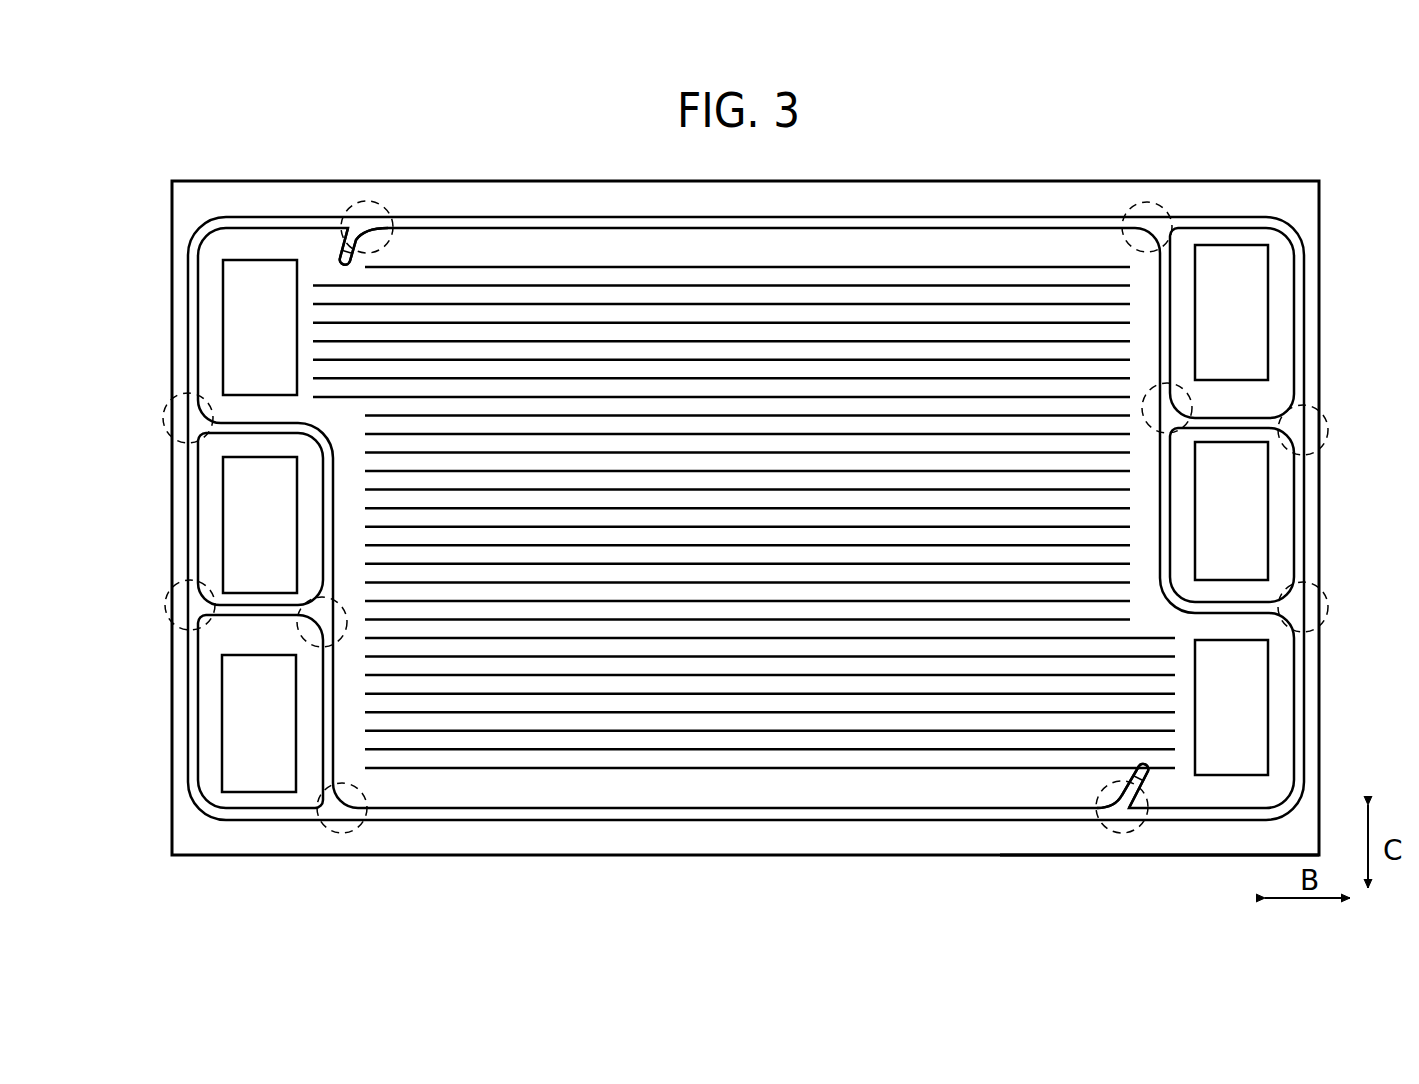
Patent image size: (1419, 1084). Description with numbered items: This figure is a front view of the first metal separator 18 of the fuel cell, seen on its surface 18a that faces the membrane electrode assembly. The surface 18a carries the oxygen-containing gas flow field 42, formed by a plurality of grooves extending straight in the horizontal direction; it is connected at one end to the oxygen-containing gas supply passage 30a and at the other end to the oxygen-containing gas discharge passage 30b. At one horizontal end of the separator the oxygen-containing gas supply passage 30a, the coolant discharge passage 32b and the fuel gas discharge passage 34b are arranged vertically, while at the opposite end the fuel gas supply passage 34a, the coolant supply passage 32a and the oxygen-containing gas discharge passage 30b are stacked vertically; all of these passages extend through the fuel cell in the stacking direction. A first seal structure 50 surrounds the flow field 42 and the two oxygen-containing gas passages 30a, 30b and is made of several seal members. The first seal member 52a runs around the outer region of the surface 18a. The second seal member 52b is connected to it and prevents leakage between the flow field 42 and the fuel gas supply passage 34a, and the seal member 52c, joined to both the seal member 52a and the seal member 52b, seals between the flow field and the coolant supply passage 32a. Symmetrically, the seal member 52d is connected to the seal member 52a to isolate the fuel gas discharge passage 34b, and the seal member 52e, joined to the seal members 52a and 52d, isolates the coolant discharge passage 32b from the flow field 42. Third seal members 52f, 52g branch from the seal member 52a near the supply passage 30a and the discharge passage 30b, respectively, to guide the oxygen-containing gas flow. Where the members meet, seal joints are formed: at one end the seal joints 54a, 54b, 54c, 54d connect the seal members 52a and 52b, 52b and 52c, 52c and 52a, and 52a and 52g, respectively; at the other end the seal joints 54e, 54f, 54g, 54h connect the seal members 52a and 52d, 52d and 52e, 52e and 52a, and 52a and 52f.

The first metal separator 18 is at (1016, 128).
The surface 18a is at (1218, 848).
The oxygen-containing gas supply passage 30a is at (260, 327).
The oxygen-containing gas discharge passage 30b is at (1231, 707).
The coolant supply passage 32a is at (1231, 511).
The coolant discharge passage 32b is at (260, 525).
The fuel gas supply passage 34a is at (1231, 312).
The fuel gas discharge passage 34b is at (259, 723).
The oxygen-containing gas flow field 42 is at (592, 262).
The first seal structure 50 is at (806, 213).
The first seal member 52a is at (745, 822).
The second seal member 52b is at (1170, 333).
The seal member 52c is at (1160, 545).
The seal member 52d is at (323, 691).
The seal member 52e is at (323, 553).
The third seal member 52f is at (345, 244).
The third seal member 52g is at (1150, 788).
The seal joint 54a is at (1148, 200).
The seal joint 54b is at (1192, 407).
The seal joint 54c is at (1330, 608).
The seal joint 54d is at (1120, 835).
The seal joint 54e is at (165, 608).
The seal joint 54f is at (300, 625).
The seal joint 54g is at (162, 428).
The seal joint 54h is at (368, 200).